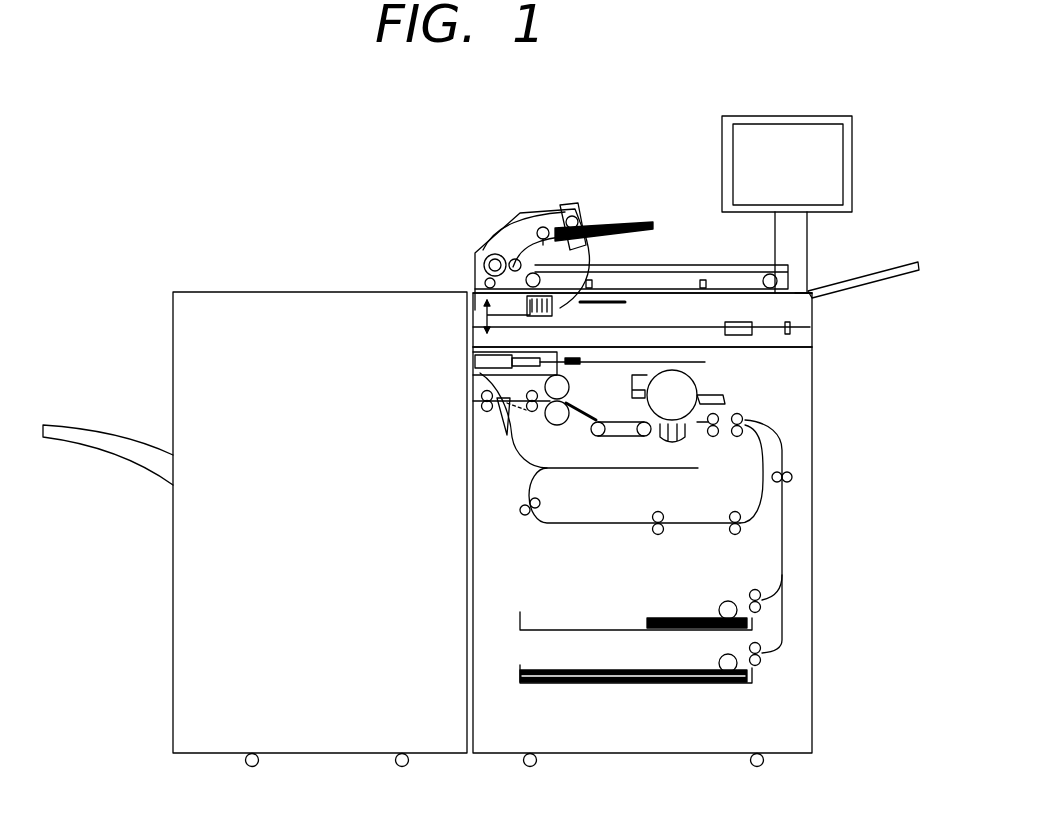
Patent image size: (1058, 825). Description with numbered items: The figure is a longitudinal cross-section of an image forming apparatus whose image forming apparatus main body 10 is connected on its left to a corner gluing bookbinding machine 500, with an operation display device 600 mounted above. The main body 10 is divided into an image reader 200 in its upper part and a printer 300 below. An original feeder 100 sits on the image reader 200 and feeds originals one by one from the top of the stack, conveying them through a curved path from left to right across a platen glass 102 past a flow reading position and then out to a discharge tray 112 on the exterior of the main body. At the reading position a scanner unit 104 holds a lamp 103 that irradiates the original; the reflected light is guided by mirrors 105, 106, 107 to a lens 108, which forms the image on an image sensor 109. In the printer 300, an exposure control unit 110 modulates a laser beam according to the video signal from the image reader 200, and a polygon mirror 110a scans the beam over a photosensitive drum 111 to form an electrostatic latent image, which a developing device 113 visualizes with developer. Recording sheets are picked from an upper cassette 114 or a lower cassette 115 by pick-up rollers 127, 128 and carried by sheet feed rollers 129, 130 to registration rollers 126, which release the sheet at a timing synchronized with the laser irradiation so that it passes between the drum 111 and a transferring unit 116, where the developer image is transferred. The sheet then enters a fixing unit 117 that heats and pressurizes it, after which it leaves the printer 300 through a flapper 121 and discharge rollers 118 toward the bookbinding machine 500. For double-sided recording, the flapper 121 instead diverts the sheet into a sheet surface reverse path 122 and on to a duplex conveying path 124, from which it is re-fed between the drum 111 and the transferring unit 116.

The image forming apparatus main body 10 is at (828, 565).
The original feeder 100 is at (539, 200).
The platen glass 102 is at (808, 296).
The lamp 103 is at (627, 307).
The scanner unit 104 is at (577, 292).
The mirror 105 is at (552, 305).
The mirror 106 is at (483, 275).
The mirror 107 is at (483, 305).
The lens 108 is at (743, 322).
The image sensor 109 is at (790, 322).
The exposure control unit 110 is at (478, 358).
The polygon mirror 110a is at (525, 350).
The photosensitive drum 111 is at (697, 385).
The discharge tray 112 is at (880, 266).
The developing device 113 is at (726, 400).
The upper cassette 114 is at (520, 612).
The lower cassette 115 is at (520, 667).
The transferring unit 116 is at (660, 440).
The fixing unit 117 is at (557, 425).
The discharge rollers 118 is at (480, 406).
The flapper 121 is at (482, 372).
The sheet surface reverse path 122 is at (524, 462).
The duplex conveying path 124 is at (620, 528).
The registration rollers 126 is at (714, 437).
The pick-up roller 127 is at (724, 602).
The pick-up roller 128 is at (720, 662).
The sheet feed roller 129 is at (752, 590).
The sheet feed roller 130 is at (760, 662).
The image reader 200 is at (812, 330).
The printer 300 is at (812, 366).
The corner gluing bookbinding machine 500 is at (204, 286).
The operation display device 600 is at (715, 137).